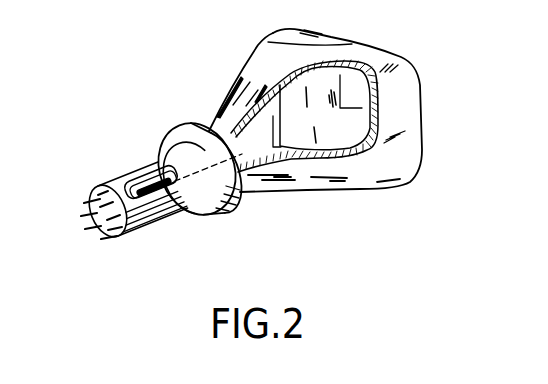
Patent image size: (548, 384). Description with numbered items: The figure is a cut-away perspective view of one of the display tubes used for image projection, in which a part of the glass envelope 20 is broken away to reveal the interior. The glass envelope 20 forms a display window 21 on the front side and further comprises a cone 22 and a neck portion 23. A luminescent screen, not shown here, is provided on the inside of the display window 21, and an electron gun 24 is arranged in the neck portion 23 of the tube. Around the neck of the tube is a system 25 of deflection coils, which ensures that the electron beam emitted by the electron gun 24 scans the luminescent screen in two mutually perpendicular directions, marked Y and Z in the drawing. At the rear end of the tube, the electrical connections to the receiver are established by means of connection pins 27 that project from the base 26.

The glass envelope 20 is at (273, 75).
The display window 21 is at (417, 97).
The cone 22 is at (228, 102).
The neck portion 23 is at (138, 226).
The electron gun 24 is at (153, 190).
The system of deflection coils 25 is at (221, 196).
The base 26 is at (108, 184).
The connection pins 27 is at (110, 241).